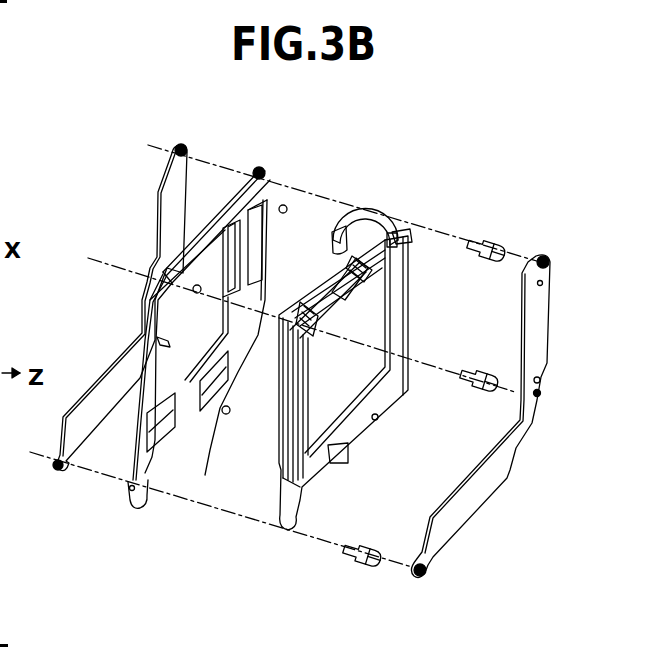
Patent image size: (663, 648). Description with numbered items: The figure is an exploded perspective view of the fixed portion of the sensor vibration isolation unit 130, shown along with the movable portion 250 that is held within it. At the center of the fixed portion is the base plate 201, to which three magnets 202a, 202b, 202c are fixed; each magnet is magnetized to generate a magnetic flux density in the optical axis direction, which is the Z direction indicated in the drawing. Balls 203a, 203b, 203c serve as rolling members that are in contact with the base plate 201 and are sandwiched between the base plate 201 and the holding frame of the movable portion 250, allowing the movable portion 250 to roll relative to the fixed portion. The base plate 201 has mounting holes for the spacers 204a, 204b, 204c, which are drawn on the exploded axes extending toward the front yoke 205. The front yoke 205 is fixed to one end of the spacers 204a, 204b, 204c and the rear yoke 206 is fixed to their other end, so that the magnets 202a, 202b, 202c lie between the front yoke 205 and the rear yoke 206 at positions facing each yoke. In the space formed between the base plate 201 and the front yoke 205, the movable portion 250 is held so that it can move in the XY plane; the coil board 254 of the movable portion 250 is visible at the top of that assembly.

The sensor vibration isolation unit 130 is at (115, 212).
The base plate 201 is at (245, 337).
The magnet 202a is at (262, 247).
The magnet 202b is at (212, 397).
The magnet 202c is at (172, 455).
The ball 203a is at (283, 205).
The ball 203b is at (229, 414).
The ball 203c is at (198, 285).
The spacer 204a is at (495, 240).
The spacer 204b is at (483, 368).
The spacer 204c is at (367, 565).
The front yoke 205 is at (540, 322).
The rear yoke 206 is at (160, 177).
The movable portion 250 is at (414, 277).
The coil board 254 is at (374, 212).